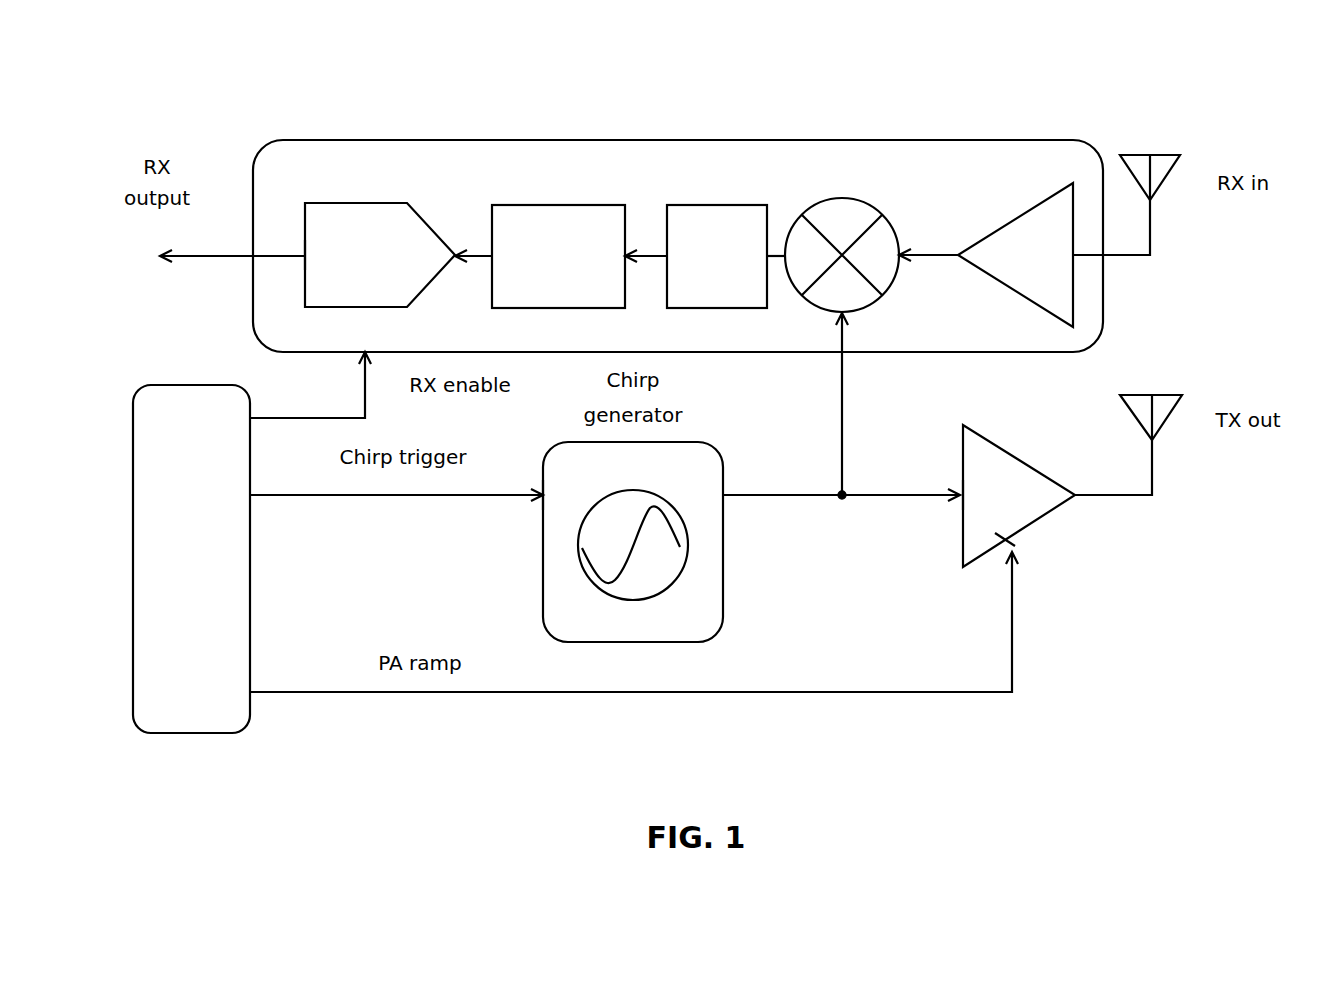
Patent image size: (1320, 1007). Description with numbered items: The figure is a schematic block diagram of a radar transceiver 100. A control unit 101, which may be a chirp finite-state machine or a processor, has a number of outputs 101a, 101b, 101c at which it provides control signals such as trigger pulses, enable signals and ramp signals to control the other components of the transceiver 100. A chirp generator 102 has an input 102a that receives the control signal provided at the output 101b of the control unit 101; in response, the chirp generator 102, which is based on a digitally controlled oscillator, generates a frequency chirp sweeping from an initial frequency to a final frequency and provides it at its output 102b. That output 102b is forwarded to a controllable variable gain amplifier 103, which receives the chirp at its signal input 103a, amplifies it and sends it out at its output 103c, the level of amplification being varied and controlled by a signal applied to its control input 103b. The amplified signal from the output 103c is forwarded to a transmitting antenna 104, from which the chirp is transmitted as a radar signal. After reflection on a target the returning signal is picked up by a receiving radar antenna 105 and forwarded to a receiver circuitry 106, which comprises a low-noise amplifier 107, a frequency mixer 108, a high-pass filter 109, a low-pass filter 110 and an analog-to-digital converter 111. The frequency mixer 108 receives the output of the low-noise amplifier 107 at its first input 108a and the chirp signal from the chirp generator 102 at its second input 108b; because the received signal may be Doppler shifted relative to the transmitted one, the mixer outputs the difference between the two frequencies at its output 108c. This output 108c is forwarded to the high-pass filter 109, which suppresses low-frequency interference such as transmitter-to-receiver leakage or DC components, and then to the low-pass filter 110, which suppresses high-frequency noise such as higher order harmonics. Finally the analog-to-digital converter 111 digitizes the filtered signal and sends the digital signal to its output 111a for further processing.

The radar transceiver 100 is at (1142, 66).
The control unit 101 is at (191, 559).
The output 101a is at (634, 622).
The output 101b is at (396, 482).
The output 101c is at (310, 385).
The chirp generator 102 is at (705, 605).
The input 102a is at (540, 505).
The output 102b is at (725, 500).
The controllable variable gain amplifier 103 is at (1019, 496).
The signal input 103a is at (958, 500).
The control input 103b is at (1005, 540).
The output 103c is at (1078, 497).
The transmitting antenna 104 is at (1160, 412).
The receiving radar antenna 105 is at (1160, 168).
The receiver circuitry 106 is at (1103, 327).
The low-noise amplifier 107 is at (1054, 255).
The frequency mixer 108 is at (849, 225).
The first input 108a is at (898, 255).
The second input 108b is at (845, 313).
The output 108c is at (786, 270).
The high-pass filter 109 is at (717, 256).
The low-pass filter 110 is at (558, 256).
The analog-to-digital converter 111 is at (380, 255).
The output 111a is at (305, 250).